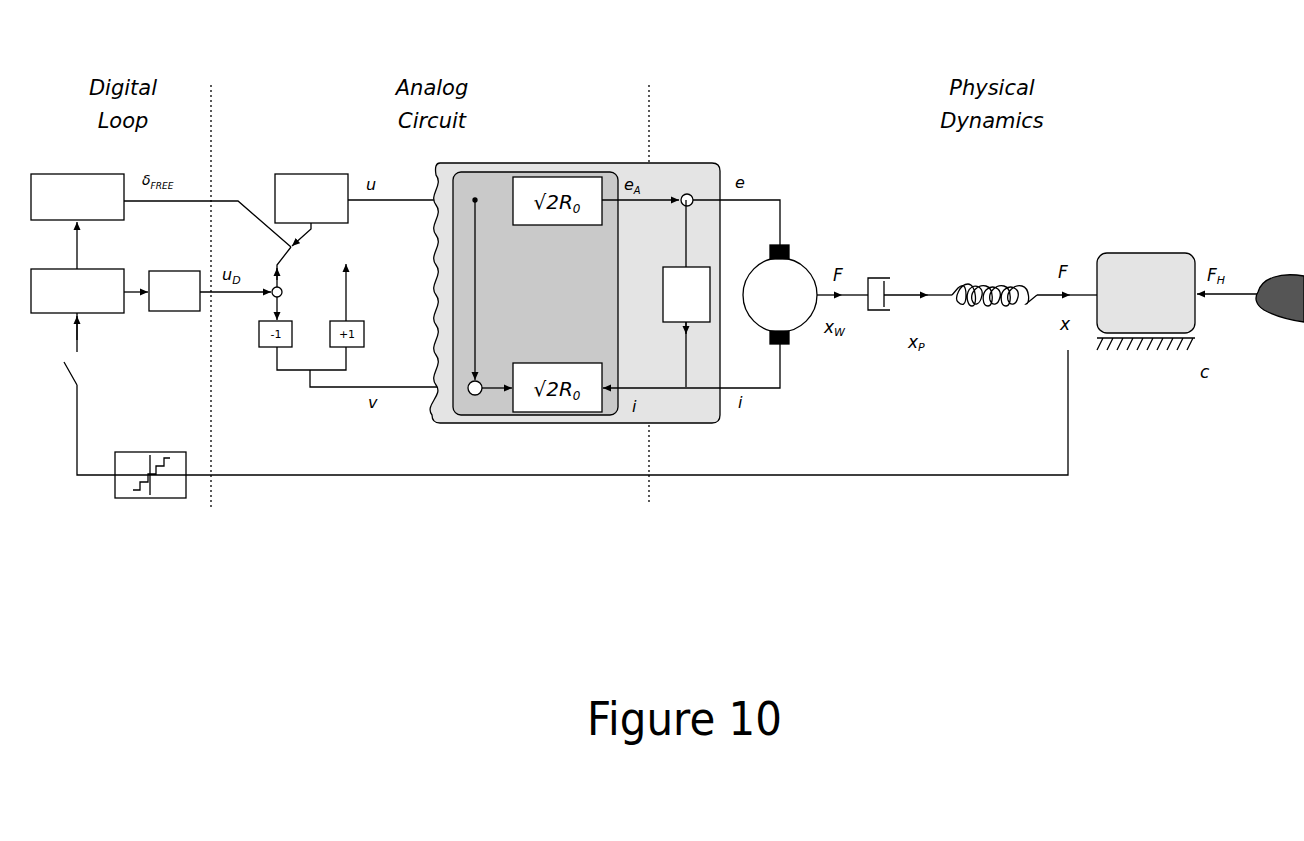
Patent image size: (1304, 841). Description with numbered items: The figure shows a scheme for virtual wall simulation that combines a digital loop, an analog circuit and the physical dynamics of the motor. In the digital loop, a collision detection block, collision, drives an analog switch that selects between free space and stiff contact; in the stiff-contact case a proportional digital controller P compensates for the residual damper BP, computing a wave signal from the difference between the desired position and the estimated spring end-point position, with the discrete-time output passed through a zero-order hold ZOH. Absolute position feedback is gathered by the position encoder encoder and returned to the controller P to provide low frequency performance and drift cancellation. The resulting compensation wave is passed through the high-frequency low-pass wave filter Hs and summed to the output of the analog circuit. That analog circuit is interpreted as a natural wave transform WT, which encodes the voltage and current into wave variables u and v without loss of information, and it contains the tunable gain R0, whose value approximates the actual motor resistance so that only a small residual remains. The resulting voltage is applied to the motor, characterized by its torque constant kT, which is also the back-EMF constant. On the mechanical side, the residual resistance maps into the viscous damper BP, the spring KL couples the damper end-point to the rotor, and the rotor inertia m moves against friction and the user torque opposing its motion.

The collision detection collision is at (77, 197).
The proportional digital controller P is at (77, 291).
The zero-order hold ZOH is at (174, 291).
The position sensor encoder is at (150, 466).
The high-frequency low-pass wave filter H(s) Hs is at (311, 198).
The wave transform WT is at (575, 304).
The tunable gain R0 is at (686, 293).
The torque constant kT is at (780, 294).
The residual damper BP is at (879, 278).
The spring KL is at (994, 276).
The rotor inertia m is at (1146, 301).